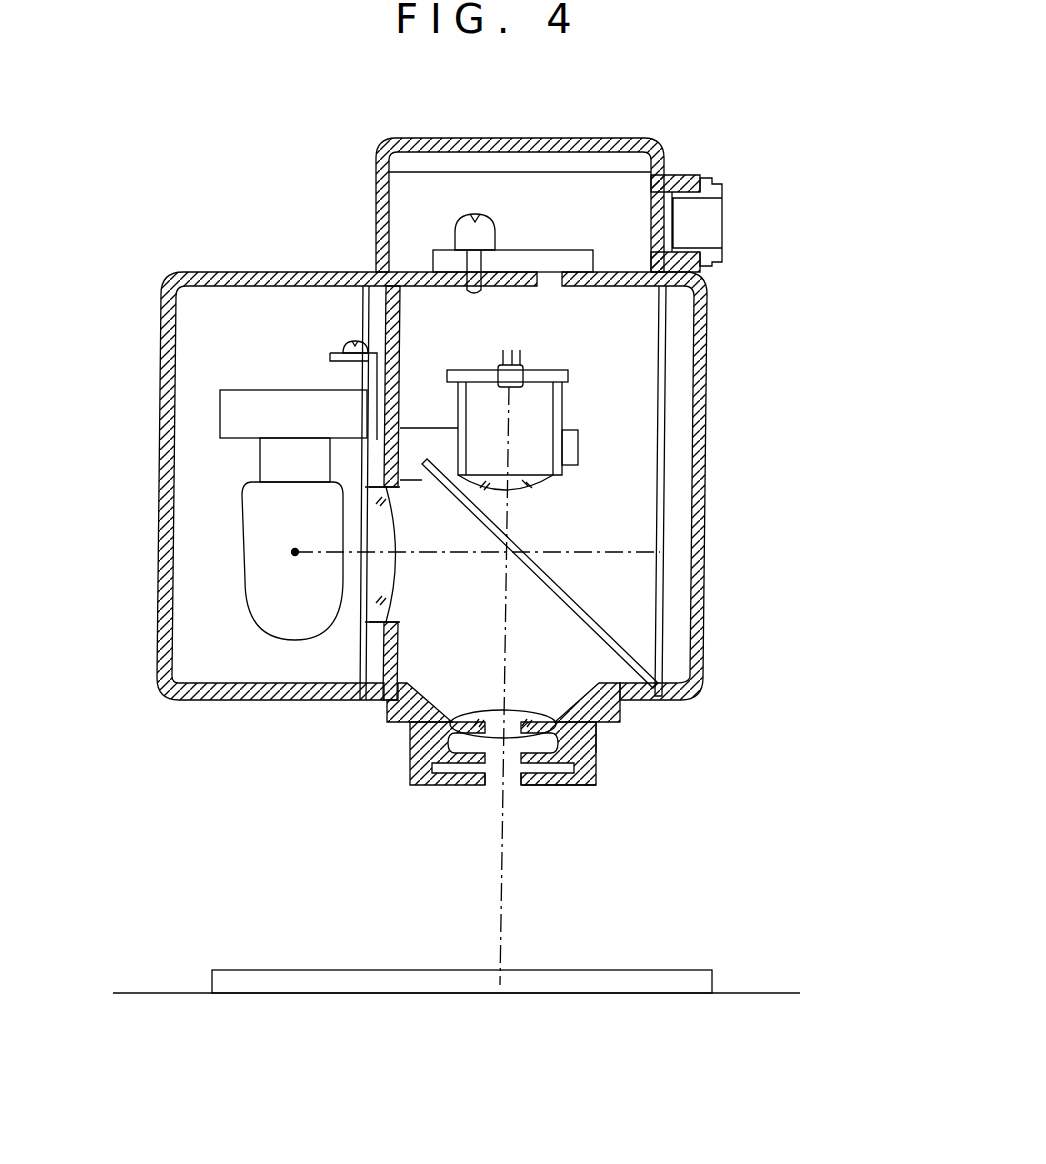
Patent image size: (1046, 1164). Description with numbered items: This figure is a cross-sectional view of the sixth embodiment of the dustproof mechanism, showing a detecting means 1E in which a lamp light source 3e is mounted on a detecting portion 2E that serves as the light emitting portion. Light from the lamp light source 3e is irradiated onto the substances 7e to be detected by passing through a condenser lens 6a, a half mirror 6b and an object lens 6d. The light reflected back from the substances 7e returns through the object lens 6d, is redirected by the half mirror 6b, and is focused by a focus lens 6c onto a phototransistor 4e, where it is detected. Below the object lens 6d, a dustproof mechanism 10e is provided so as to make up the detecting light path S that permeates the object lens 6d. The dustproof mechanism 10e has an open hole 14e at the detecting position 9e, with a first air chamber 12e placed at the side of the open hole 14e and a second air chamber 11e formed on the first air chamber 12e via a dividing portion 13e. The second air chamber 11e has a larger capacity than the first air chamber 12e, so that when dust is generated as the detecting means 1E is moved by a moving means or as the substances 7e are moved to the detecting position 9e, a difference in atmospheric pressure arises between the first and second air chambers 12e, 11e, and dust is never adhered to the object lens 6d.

The detecting means 1E is at (653, 127).
The detecting portion 2E is at (338, 333).
The lamp light source 3e is at (257, 508).
The phototransistor 4e is at (522, 378).
The condenser lens 6a is at (367, 585).
The half mirror 6b is at (592, 625).
The focus lens 6c is at (523, 490).
The object lens 6d is at (620, 712).
The substances to be detected 7e is at (344, 985).
The detecting position 9e is at (546, 917).
The dustproof mechanism 10e is at (407, 789).
The second air chamber 11e is at (533, 712).
The first air chamber 12e is at (593, 787).
The dividing portion 13e is at (596, 752).
The open hole 14e is at (491, 790).
The detecting light path S is at (503, 862).